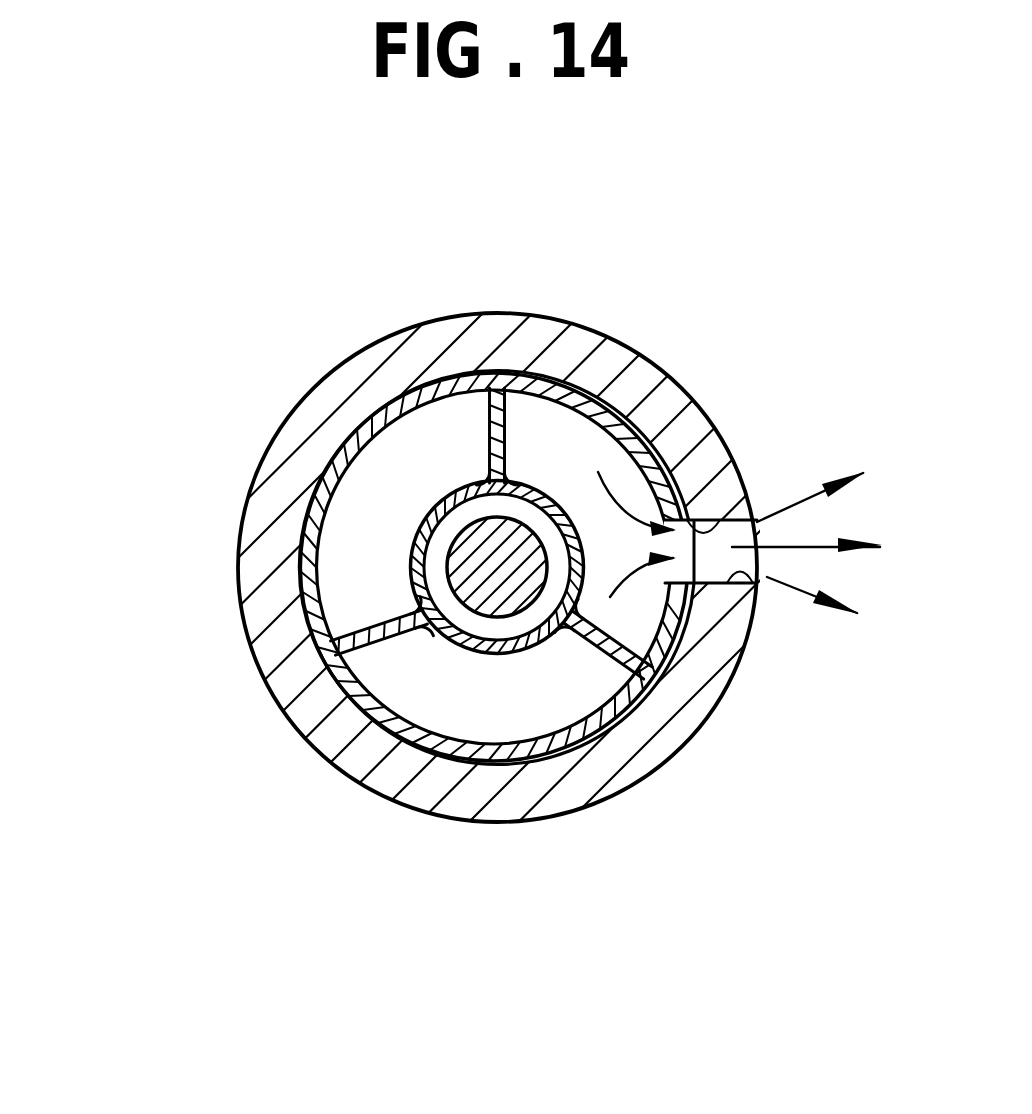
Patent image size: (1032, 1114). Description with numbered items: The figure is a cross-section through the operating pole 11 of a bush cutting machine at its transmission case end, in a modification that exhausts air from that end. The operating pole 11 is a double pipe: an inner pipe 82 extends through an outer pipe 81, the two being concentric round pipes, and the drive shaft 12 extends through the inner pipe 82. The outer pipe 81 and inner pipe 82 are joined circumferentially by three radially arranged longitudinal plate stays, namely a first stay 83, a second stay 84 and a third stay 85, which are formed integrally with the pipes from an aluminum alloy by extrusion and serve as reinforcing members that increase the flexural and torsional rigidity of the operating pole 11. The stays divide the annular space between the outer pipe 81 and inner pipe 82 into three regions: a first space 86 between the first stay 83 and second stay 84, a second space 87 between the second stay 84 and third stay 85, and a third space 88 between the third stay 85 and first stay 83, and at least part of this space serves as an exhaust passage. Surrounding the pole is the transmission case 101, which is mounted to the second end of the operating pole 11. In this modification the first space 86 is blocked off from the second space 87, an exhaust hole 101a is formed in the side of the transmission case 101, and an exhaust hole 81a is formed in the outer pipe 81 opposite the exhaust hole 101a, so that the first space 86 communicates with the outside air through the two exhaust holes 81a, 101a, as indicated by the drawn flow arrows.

The operating pole 11 is at (122, 311).
The drive shaft 12 is at (463, 572).
The outer pipe 81 is at (318, 514).
The exhaust hole 81a is at (739, 520).
The inner pipe 82 is at (430, 517).
The first stay 83 is at (561, 457).
The second stay 84 is at (604, 662).
The third stay 85 is at (372, 648).
The first space 86 is at (592, 400).
The second space 87 is at (512, 718).
The third space 88 is at (451, 428).
The transmission case 101 is at (702, 700).
The exhaust hole 101a is at (761, 588).